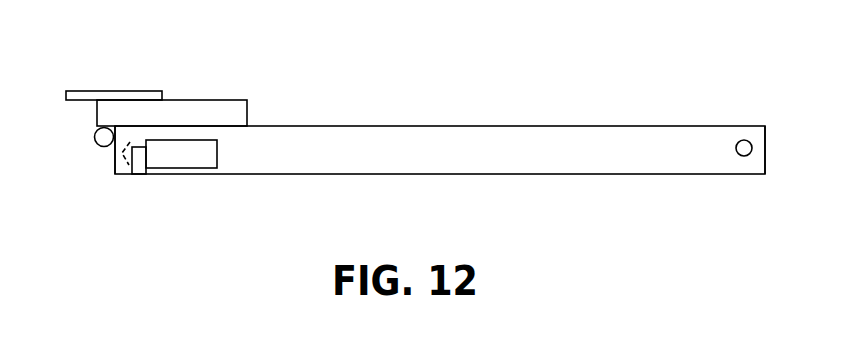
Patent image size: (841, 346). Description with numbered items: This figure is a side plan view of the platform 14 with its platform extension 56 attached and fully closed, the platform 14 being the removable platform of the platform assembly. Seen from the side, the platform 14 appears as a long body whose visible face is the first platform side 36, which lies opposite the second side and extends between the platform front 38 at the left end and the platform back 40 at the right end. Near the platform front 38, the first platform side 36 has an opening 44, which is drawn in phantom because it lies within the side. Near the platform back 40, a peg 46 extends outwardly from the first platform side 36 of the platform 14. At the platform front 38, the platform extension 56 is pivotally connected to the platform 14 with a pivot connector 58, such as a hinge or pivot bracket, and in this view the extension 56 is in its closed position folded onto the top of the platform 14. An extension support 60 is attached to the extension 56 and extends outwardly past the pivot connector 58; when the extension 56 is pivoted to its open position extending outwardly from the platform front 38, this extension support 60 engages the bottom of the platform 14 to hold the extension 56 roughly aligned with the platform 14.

The platform 14 is at (426, 179).
The first platform side 36 is at (545, 140).
The platform front 38 is at (113, 174).
The platform back 40 is at (765, 157).
The opening 44 is at (140, 174).
The peg 46 is at (744, 156).
The platform extension 56 is at (209, 110).
The pivot connector 58 is at (95, 142).
The extension support 60 is at (97, 98).